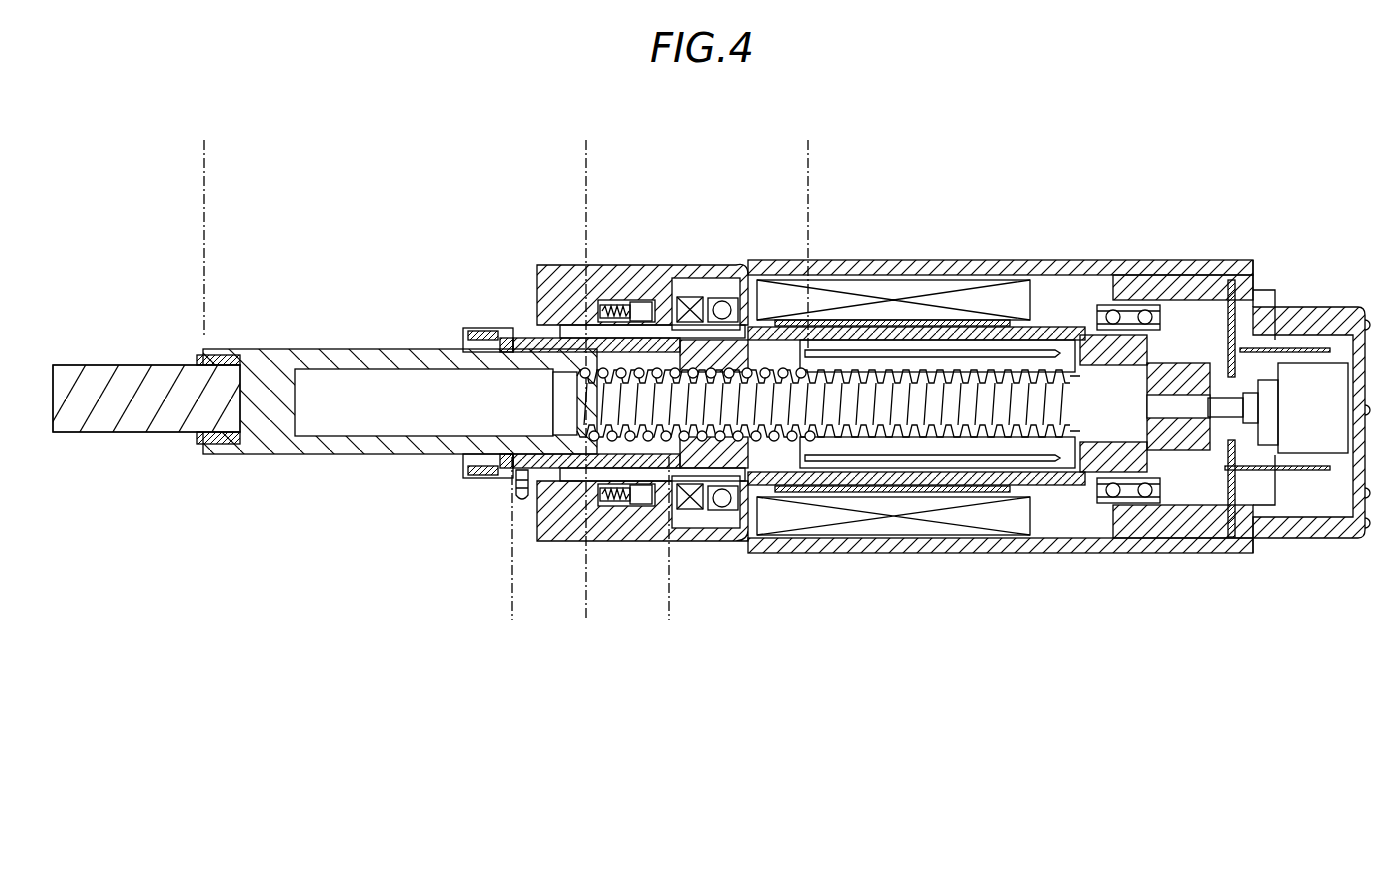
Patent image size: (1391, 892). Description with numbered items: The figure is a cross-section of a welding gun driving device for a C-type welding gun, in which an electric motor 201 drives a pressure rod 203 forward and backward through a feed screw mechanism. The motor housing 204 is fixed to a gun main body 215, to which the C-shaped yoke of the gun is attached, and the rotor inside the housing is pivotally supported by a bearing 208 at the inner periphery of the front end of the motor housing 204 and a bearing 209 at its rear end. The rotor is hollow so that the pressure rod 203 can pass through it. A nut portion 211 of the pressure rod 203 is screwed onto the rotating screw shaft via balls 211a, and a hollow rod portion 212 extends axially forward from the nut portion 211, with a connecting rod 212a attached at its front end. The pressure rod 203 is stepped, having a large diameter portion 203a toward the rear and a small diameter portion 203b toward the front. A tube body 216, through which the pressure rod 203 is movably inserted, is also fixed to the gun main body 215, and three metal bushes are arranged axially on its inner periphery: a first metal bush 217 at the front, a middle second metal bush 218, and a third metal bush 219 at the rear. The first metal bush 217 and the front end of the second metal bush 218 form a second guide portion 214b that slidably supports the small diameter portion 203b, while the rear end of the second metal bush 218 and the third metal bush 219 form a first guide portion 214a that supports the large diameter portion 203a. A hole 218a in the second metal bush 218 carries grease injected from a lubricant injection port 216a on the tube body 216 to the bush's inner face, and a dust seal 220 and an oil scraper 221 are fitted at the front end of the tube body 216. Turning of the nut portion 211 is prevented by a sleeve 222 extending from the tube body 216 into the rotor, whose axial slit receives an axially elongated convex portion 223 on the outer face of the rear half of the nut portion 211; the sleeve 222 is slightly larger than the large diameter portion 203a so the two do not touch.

The electric motor 201 is at (711, 388).
The pressure rod 203 is at (385, 456).
The large diameter portion 203a is at (808, 175).
The small diameter portion 203b is at (586, 175).
The motor housing 204 is at (965, 259).
The bearing 208 is at (690, 297).
The bearing 209 is at (1150, 305).
The nut portion 211 is at (777, 468).
The balls 211a is at (704, 468).
The hollow rod portion 212 is at (380, 350).
The connecting rod 212a is at (158, 408).
The first guide portion 214a is at (669, 601).
The second guide portion 214b is at (586, 601).
The gun main body 215 is at (604, 285).
The tube body 216 is at (500, 328).
The lubricant injection port 216a is at (522, 503).
The first metal bush 217 is at (538, 338).
The second metal bush 218 is at (598, 306).
The hole 218a is at (586, 510).
The third metal bush 219 is at (640, 325).
The dust seal 220 is at (470, 472).
The oil scraper 221 is at (494, 482).
The sleeve 222 is at (848, 340).
The convex portion 223 is at (748, 327).